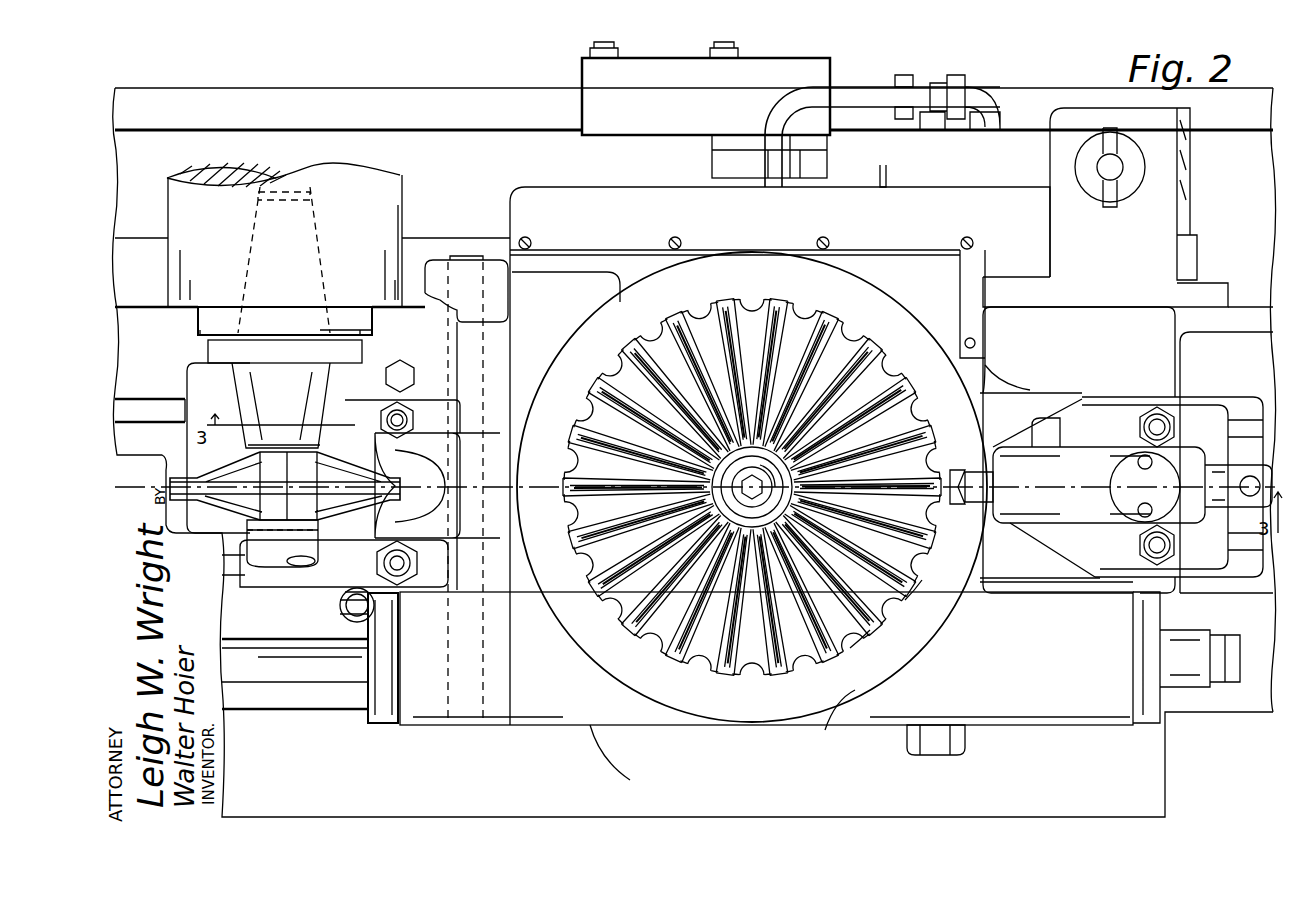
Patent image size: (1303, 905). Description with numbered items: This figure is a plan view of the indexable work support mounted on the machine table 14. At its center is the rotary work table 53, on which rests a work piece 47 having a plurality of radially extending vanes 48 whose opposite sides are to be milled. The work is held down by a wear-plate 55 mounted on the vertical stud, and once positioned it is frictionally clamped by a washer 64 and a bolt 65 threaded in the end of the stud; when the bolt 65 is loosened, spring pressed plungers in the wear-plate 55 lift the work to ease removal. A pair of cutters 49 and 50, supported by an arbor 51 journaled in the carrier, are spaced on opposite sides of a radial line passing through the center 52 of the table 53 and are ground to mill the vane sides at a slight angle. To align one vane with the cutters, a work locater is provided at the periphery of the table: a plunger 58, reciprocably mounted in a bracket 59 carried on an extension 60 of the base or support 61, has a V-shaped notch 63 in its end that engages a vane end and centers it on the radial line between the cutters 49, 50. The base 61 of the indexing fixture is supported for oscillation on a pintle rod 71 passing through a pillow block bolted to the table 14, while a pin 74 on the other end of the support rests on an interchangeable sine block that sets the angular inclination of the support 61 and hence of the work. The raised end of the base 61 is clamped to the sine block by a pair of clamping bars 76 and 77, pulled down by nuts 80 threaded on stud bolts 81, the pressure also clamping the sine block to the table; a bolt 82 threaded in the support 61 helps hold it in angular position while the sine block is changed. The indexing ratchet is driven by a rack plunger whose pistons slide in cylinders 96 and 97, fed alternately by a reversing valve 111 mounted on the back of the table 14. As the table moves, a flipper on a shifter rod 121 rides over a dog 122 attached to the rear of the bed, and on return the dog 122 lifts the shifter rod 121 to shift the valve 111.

The table 14 is at (1070, 320).
The work piece 47 is at (740, 700).
The radially extending vanes 48 is at (618, 545).
The cutter 49 is at (195, 460).
The cutter 50 is at (240, 500).
The arbor 51 is at (345, 335).
The center of the rotary work table 52 is at (658, 630).
The rotary work table 53 is at (830, 740).
The wear-plate 55 is at (738, 670).
The plunger 58 is at (1228, 470).
The bracket 59 is at (1062, 460).
The extension 60 is at (1195, 405).
The base or support 61 is at (537, 307).
The V-shaped notch 63 is at (960, 470).
The washer 64 is at (862, 653).
The bolt 65 is at (919, 600).
The pintle rod 71 is at (945, 755).
The pin 74 is at (445, 262).
The clamping bar 76 is at (320, 580).
The clamping bar 77 is at (345, 415).
The nuts 80 is at (420, 580).
The stud bolts 81 is at (385, 565).
The bolt 82 is at (405, 372).
The cylinder 96 is at (490, 680).
The cylinder 97 is at (1095, 670).
The reversing valve 111 is at (1030, 145).
The shifter rod 121 is at (1118, 172).
The dog 122 is at (813, 164).